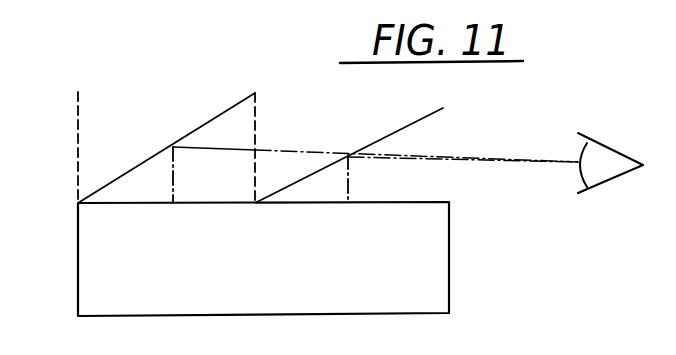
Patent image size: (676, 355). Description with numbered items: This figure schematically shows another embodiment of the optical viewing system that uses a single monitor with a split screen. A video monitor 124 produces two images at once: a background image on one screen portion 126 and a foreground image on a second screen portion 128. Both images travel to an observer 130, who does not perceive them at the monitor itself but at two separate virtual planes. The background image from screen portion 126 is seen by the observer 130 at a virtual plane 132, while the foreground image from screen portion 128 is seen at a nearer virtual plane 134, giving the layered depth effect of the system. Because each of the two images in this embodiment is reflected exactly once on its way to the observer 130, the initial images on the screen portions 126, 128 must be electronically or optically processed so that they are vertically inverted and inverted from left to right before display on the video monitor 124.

The video monitor 124 is at (450, 287).
The screen portion 126 is at (195, 203).
The screen portion 128 is at (374, 203).
The observer 130 is at (612, 148).
The virtual plane 132 is at (78, 108).
The virtual plane 134 is at (256, 110).